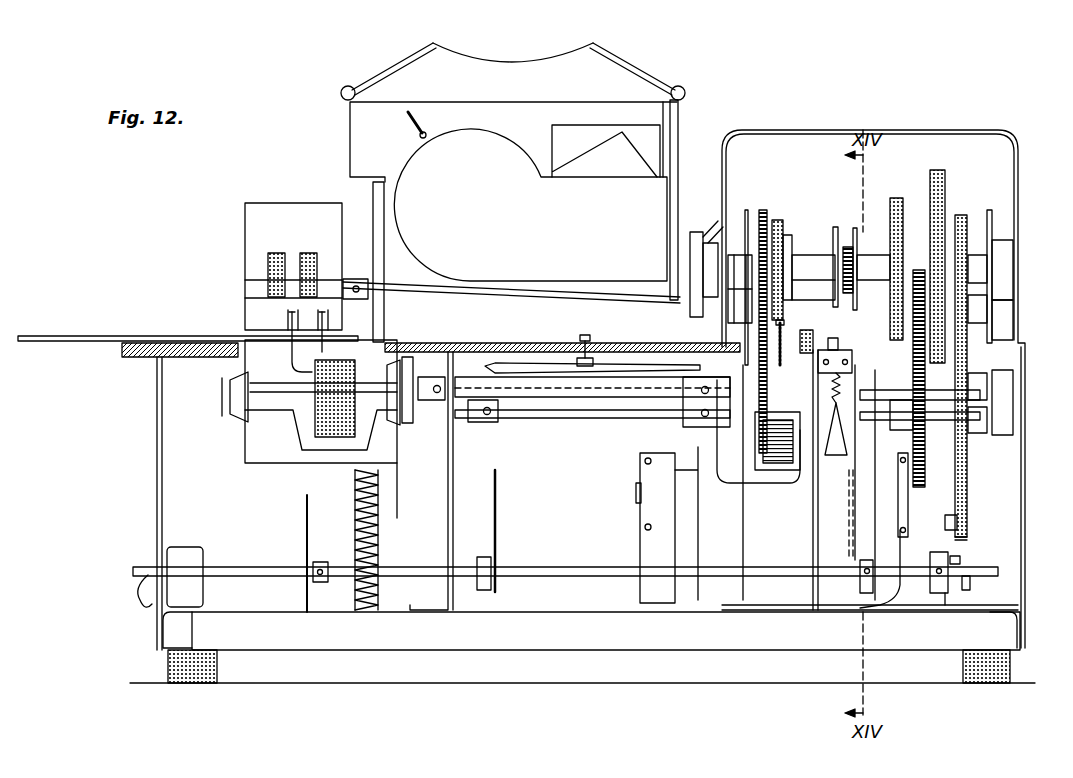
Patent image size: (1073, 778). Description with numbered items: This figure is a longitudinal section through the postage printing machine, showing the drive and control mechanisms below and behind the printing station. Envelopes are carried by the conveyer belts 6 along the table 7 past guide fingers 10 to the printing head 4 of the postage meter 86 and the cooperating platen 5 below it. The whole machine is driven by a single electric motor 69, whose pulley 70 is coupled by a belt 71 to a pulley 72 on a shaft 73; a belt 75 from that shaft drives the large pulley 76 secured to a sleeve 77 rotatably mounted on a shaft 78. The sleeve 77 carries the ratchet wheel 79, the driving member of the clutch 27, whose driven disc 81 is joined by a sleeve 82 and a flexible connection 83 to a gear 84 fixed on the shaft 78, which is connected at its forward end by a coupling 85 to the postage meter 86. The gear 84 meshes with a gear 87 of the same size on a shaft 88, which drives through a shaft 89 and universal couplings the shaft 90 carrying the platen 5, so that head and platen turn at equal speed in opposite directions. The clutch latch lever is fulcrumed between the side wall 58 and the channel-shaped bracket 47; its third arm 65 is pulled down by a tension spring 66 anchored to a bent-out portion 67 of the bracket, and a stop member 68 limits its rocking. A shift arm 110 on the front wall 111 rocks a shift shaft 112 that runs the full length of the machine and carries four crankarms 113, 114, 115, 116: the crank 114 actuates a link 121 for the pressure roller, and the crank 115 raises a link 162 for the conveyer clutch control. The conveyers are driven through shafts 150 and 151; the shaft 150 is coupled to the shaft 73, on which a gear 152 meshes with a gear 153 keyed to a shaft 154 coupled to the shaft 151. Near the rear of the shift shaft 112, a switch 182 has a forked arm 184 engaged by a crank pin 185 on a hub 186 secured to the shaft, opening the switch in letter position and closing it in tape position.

The printing head 4 is at (272, 190).
The platen 5 is at (310, 405).
The conveyer belts 6 is at (308, 258).
The table 7 is at (185, 336).
The guide fingers 10 is at (290, 350).
The clutch 27 is at (838, 214).
The channel-shaped bracket 47 is at (815, 495).
The side wall 58 is at (856, 496).
The third arm 65 is at (830, 340).
The tension spring 66 is at (839, 388).
The bent-out portion 67 is at (835, 442).
The stop member 68 is at (830, 373).
The electric motor 69 is at (680, 443).
The motor pulley 70 is at (962, 530).
The belt 71 is at (972, 445).
The pulley 72 is at (966, 217).
The shaft 73 is at (1010, 322).
The belt 75 is at (938, 170).
The large pulley 76 is at (950, 200).
The sleeve 77 is at (915, 262).
The shaft 78 is at (1005, 265).
The ratchet wheel 79 is at (848, 248).
The disc 81 is at (834, 236).
The sleeve 82 is at (809, 262).
The flexible connection 83 is at (780, 218).
The gear 84 is at (762, 212).
The coupling 85 is at (702, 228).
The postage meter 86 is at (692, 115).
The gear 87 is at (770, 465).
The shaft 88 is at (870, 390).
The shaft 89 is at (583, 398).
The platen shaft 90 is at (392, 378).
The shift arm 110 is at (138, 608).
The front wall 111 is at (157, 485).
The shift shaft 112 is at (574, 577).
The crankarm 113 is at (316, 562).
The crankarm 114 is at (478, 590).
The crankarm 115 is at (884, 592).
The crankarm 116 is at (930, 560).
The link 121 is at (500, 500).
The shaft 150 is at (502, 292).
The shaft 151 is at (526, 420).
The gear 152 is at (915, 345).
The gear 153 is at (913, 440).
The shaft 154 is at (945, 420).
The link 162 is at (848, 500).
The switch 182 is at (968, 588).
The switch arm 184 is at (960, 563).
The crank pin 185 is at (948, 545).
The hub 186 is at (946, 600).